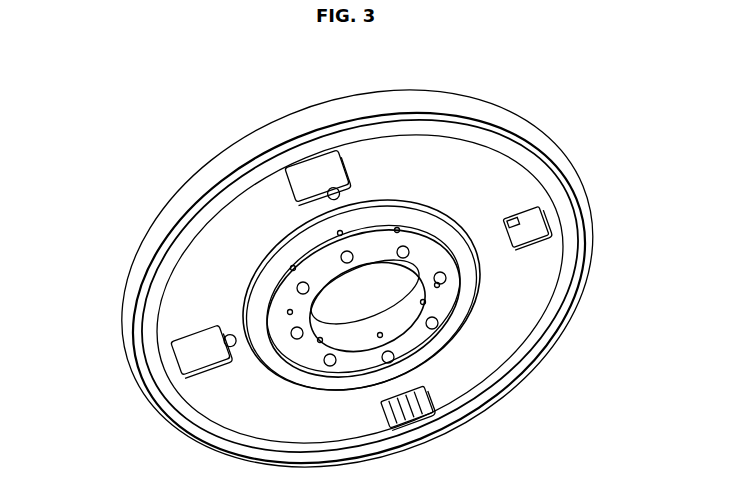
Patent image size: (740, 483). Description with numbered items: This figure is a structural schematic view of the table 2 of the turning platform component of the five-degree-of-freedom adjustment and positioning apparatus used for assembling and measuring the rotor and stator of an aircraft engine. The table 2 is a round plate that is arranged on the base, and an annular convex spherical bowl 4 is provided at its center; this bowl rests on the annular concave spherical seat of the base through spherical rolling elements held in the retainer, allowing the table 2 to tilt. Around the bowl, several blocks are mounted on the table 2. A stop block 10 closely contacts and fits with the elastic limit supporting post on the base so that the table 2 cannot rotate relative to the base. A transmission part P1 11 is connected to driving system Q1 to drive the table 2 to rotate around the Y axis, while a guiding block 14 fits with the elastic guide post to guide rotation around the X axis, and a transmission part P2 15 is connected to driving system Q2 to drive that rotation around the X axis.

The table 2 is at (203, 177).
The annular convex spherical bowl 4 is at (388, 215).
The stop block 10 is at (408, 410).
The transmission part P1 11 is at (315, 165).
The guiding block 14 is at (520, 212).
The transmission part P2 15 is at (203, 352).